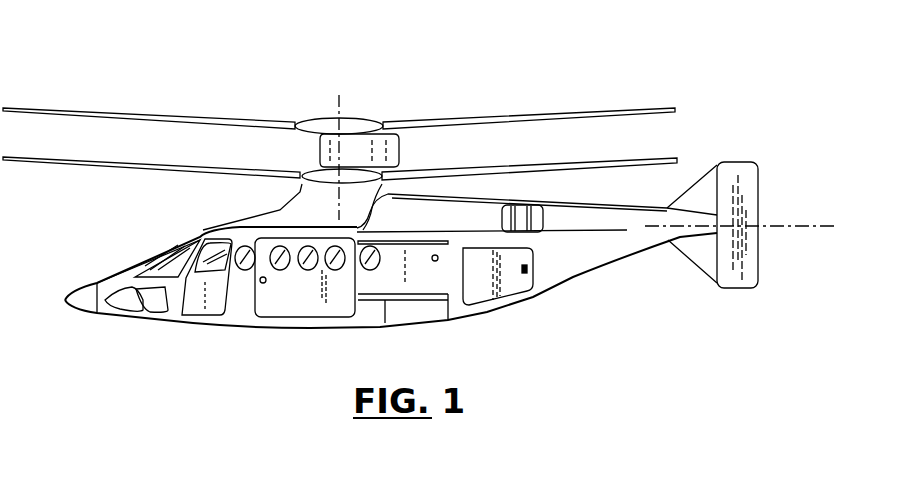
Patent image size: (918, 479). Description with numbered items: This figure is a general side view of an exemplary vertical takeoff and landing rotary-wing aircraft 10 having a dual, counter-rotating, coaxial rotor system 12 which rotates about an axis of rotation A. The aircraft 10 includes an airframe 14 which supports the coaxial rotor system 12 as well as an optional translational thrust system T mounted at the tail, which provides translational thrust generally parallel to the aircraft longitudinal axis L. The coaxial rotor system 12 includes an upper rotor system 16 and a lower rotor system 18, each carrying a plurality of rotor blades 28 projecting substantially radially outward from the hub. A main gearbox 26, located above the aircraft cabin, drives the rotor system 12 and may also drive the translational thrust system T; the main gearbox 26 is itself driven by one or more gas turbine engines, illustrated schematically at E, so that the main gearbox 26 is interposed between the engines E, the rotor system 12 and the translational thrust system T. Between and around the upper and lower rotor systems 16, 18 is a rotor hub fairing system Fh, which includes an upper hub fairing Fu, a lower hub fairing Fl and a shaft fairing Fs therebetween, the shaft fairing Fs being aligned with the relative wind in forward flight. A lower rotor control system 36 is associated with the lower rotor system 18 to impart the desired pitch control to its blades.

The rotary-wing aircraft 10 is at (449, 79).
The dual, counter-rotating, coaxial rotor system 12 is at (369, 110).
The airframe 14 is at (232, 227).
The upper rotor system 16 is at (389, 116).
The lower rotor system 18 is at (294, 185).
The main gearbox 26 is at (328, 216).
The rotor blade 28 is at (307, 300).
The lower rotor control system 36 is at (282, 136).
The axis of rotation A is at (344, 98).
The engines E is at (597, 218).
The translational thrust system T is at (746, 148).
The aircraft longitudinal axis L is at (784, 228).
The upper hub fairing Fu is at (309, 112).
The lower hub fairing Fl is at (305, 168).
The shaft fairing Fs is at (376, 147).
The rotor hub fairing system Fh is at (503, 149).